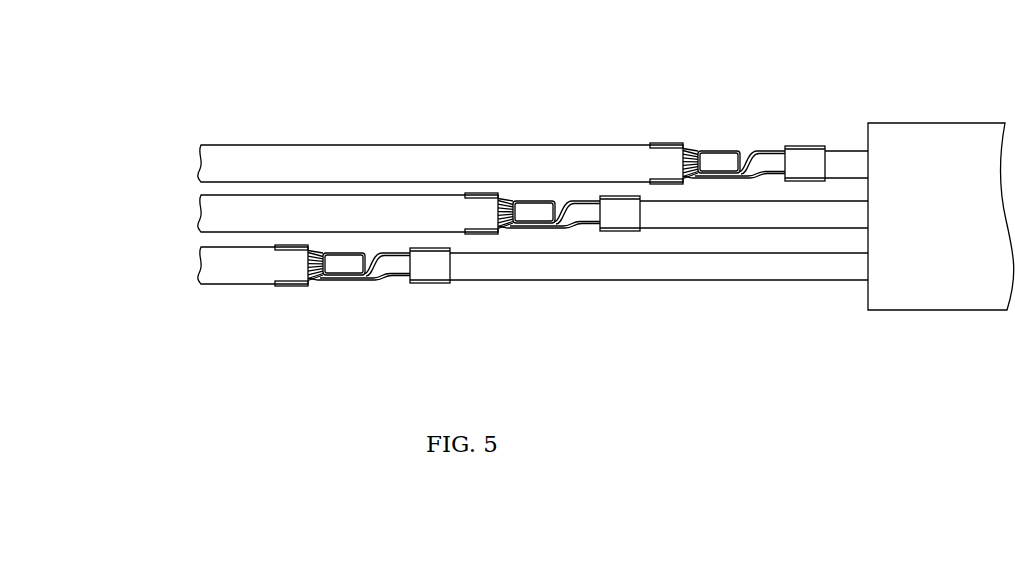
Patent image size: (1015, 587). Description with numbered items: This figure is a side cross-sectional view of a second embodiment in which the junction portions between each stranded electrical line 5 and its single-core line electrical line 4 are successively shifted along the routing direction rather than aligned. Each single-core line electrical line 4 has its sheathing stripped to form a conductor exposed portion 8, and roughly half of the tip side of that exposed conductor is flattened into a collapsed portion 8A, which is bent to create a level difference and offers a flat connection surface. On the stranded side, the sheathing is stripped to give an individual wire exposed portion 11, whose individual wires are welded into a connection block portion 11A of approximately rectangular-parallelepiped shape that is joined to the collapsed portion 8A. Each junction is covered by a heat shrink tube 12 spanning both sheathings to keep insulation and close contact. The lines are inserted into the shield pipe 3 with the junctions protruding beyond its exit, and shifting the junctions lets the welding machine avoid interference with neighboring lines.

The shield pipe 3 is at (957, 135).
The single-core line electrical line 4 is at (840, 168).
The stranded electrical line 5 is at (258, 262).
The conductor exposed portion 8 is at (388, 265).
The collapsed portion 8A is at (353, 278).
The individual wire exposed portion 11 is at (308, 283).
The connection block portion 11A is at (344, 265).
The heat shrink tube 12 is at (298, 247).